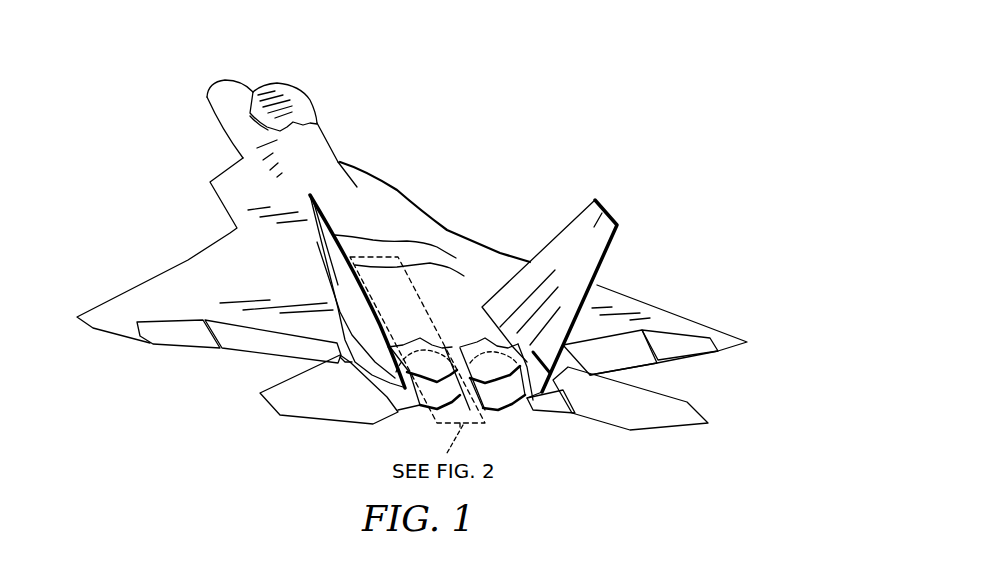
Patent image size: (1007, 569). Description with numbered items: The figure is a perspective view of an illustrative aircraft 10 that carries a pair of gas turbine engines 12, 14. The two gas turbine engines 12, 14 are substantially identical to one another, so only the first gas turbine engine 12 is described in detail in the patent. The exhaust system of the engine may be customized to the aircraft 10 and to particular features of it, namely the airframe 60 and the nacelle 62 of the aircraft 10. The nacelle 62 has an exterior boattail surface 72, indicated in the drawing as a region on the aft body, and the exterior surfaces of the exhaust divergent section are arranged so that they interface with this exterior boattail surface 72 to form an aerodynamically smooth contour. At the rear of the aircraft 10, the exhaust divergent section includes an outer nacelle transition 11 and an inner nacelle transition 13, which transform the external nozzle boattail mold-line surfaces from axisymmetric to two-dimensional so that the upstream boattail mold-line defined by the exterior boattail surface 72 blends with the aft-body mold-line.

The aircraft 10 is at (509, 104).
The outer nacelle transition 11 is at (400, 376).
The gas turbine engine 12 is at (381, 272).
The inner nacelle transition 13 is at (432, 408).
The gas turbine engine 14 is at (447, 280).
The airframe 60 is at (362, 198).
The nacelle 62 is at (415, 242).
The exterior boattail surface 72 is at (415, 319).